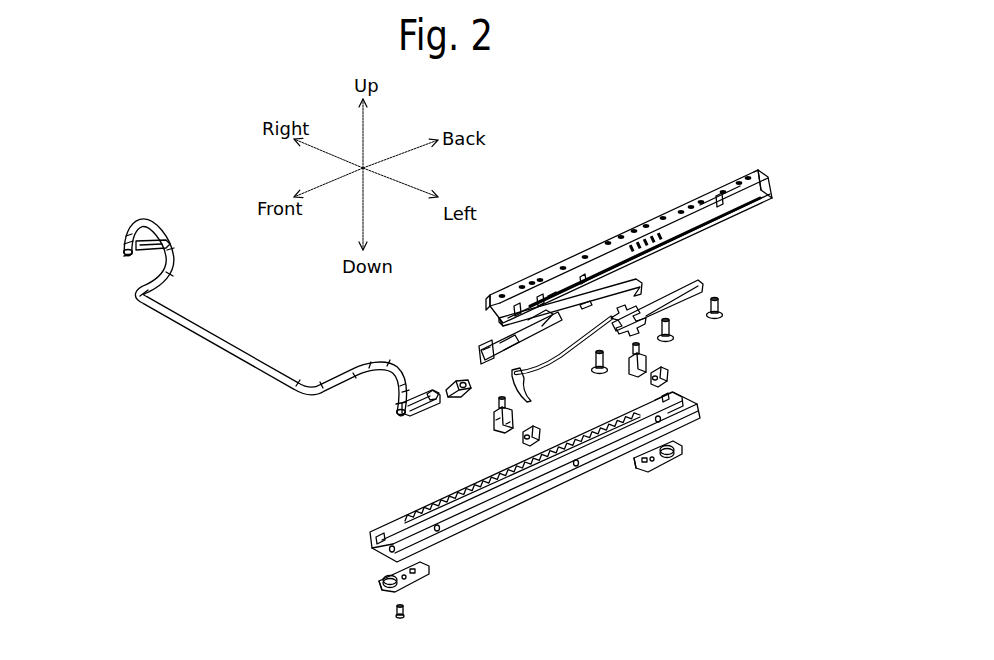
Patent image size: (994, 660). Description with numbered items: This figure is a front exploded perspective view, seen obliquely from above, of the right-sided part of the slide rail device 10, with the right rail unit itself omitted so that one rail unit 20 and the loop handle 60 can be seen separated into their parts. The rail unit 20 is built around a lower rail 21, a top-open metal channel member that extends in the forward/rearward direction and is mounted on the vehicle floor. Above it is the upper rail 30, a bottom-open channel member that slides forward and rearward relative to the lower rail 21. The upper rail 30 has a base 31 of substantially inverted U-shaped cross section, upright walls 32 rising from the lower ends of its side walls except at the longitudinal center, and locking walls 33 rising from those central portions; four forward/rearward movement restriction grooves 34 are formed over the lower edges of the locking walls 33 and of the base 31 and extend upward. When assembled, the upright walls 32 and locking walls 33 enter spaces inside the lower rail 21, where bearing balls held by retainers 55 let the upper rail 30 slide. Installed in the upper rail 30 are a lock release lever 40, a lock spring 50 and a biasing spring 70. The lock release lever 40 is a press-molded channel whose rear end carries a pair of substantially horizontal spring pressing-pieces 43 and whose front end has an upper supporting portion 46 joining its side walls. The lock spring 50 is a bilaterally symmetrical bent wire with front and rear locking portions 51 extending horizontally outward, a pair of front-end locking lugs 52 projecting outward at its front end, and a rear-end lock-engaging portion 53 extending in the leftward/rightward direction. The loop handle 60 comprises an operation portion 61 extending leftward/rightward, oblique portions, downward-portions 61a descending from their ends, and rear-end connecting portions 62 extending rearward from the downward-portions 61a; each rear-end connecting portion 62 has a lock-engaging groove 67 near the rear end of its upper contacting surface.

The slide rail device 10 is at (258, 513).
The rail unit 20 is at (440, 300).
The lower rail 21 is at (509, 501).
The upper rail 30 is at (577, 260).
The base 31 is at (726, 185).
The upright walls 32 is at (488, 305).
The locking walls 33 is at (646, 246).
The forward/rearward movement restriction grooves 34 is at (648, 250).
The lock release lever 40 is at (487, 357).
The spring pressing-pieces 43 is at (638, 292).
The upper supporting portion 46 is at (481, 350).
The lock spring 50 is at (648, 343).
The locking portions 51 is at (634, 308).
The front-end locking lugs 52 is at (533, 385).
The rear-end lock-engaging portion 53 is at (706, 281).
The retainers 55 is at (524, 441).
The loop handle 60 is at (284, 306).
The operation portion 61 is at (253, 303).
The downward-portions 61a is at (128, 232).
The rear-end connecting portions 62 is at (164, 243).
The lock-engaging groove 67 is at (430, 394).
The biasing spring 70 is at (460, 398).